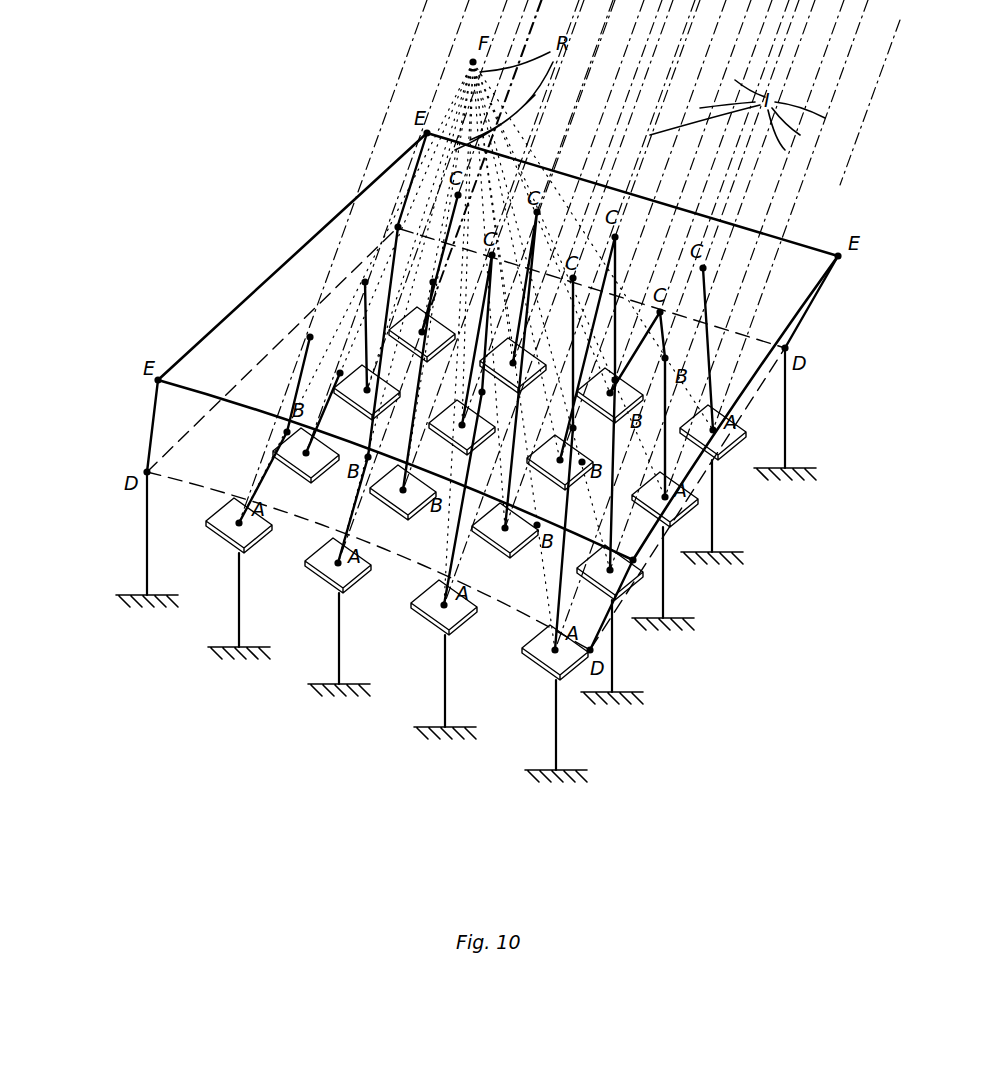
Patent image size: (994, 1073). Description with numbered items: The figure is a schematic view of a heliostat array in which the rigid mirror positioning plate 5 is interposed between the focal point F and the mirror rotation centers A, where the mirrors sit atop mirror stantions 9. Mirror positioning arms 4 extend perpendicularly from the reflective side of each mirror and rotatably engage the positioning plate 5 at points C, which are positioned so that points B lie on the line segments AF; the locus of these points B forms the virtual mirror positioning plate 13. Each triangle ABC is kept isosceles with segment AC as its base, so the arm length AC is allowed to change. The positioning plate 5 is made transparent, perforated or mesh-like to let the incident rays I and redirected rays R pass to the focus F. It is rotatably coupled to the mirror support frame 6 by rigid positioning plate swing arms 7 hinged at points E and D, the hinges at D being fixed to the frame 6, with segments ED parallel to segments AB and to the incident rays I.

The mirror positioning arms 4 is at (710, 302).
The rigid mirror positioning plate 5 is at (270, 302).
The mirror support frame 6 is at (142, 542).
The positioning plate swing arm 7 is at (143, 438).
The mirror stantions 9 is at (337, 630).
The virtual mirror positioning plate 13 is at (207, 455).